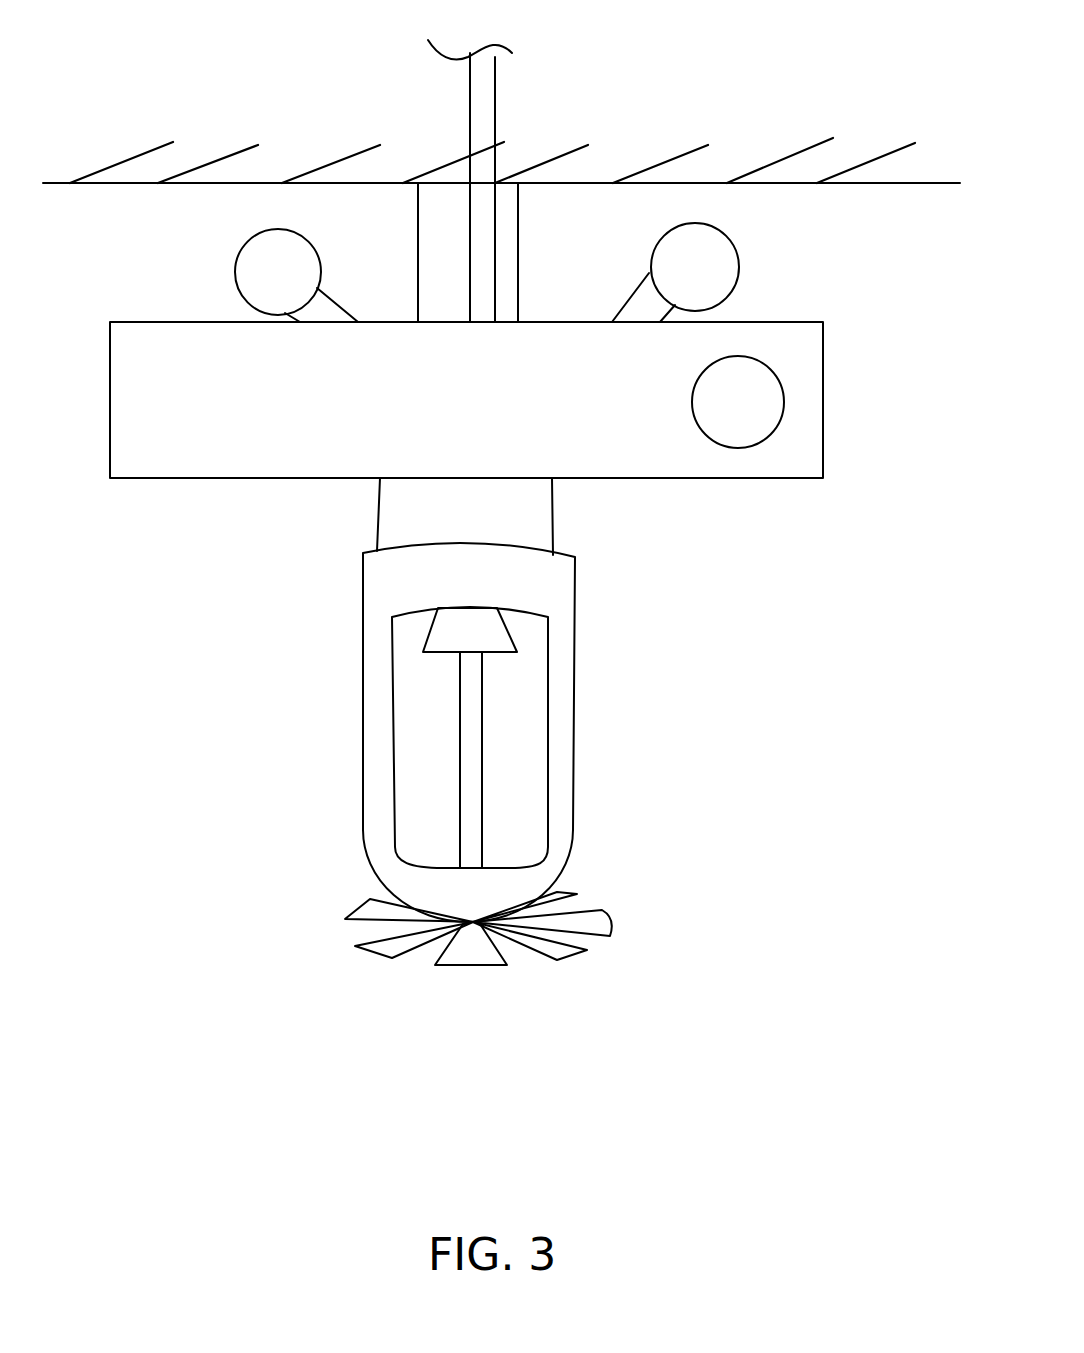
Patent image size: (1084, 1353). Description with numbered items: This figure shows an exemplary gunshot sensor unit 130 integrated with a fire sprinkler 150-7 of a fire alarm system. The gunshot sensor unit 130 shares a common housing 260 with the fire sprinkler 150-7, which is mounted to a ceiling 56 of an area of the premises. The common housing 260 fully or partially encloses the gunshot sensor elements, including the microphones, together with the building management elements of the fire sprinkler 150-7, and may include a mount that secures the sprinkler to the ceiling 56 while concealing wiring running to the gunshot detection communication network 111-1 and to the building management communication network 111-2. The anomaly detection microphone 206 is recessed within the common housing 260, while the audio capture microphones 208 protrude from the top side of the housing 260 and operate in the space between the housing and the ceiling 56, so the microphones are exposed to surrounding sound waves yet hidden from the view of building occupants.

The ceiling 56 is at (501, 141).
The gunshot detection communication network 111-1 is at (470, 107).
The building management communication network 111-2 is at (497, 82).
The common housing 260 is at (830, 380).
The audio capture microphone 208 is at (698, 328).
The anomaly detection microphone 206 is at (763, 437).
The gunshot sensor unit 130 is at (305, 505).
The fire sprinkler 150-7 is at (268, 1065).